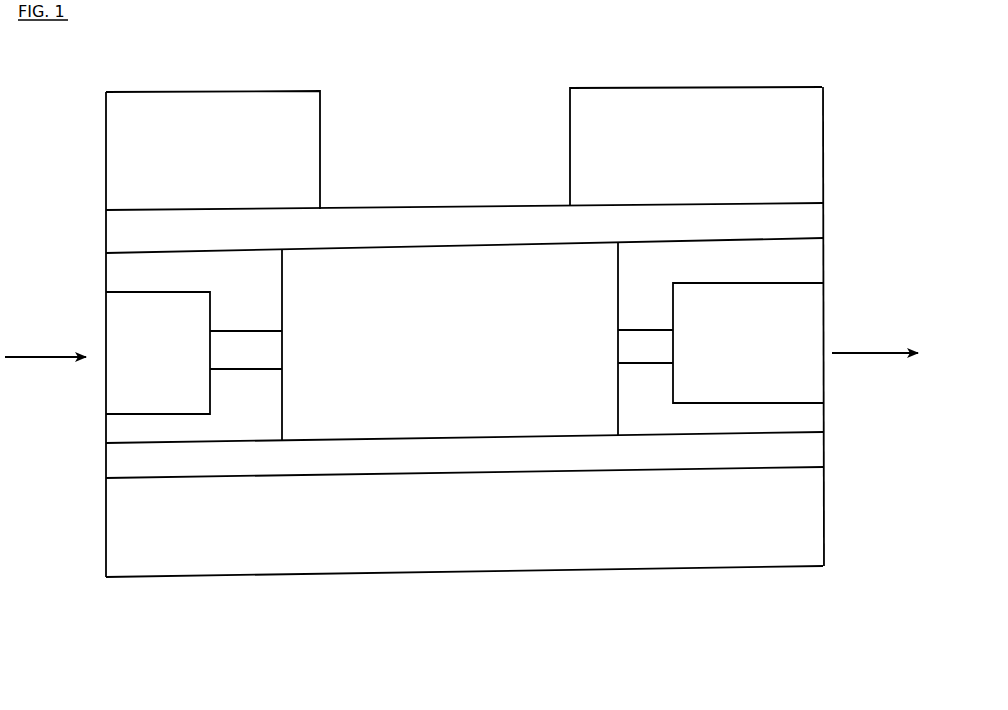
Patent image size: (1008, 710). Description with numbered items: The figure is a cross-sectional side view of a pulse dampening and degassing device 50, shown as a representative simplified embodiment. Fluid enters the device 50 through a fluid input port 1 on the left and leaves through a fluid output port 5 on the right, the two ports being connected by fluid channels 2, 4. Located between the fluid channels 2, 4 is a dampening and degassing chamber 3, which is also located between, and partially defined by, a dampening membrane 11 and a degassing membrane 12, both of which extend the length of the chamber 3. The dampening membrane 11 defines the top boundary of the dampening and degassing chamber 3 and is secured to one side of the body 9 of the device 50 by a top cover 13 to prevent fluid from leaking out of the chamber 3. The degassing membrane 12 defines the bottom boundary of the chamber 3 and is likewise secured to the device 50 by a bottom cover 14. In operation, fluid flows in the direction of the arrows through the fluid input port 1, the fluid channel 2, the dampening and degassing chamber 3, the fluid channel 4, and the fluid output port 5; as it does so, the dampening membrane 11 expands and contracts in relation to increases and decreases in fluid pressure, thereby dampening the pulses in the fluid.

The fluid input port 1 is at (120, 398).
The fluid channel 2 is at (252, 360).
The dampening and degassing chamber 3 is at (427, 359).
The fluid channel 4 is at (651, 358).
The fluid output port 5 is at (797, 377).
The body 9 is at (135, 280).
The dampening membrane 11 is at (807, 221).
The degassing membrane 12 is at (803, 450).
The top cover 13 is at (220, 166).
The bottom cover 14 is at (290, 561).
The pulse dampening and degassing device 50 is at (497, 597).